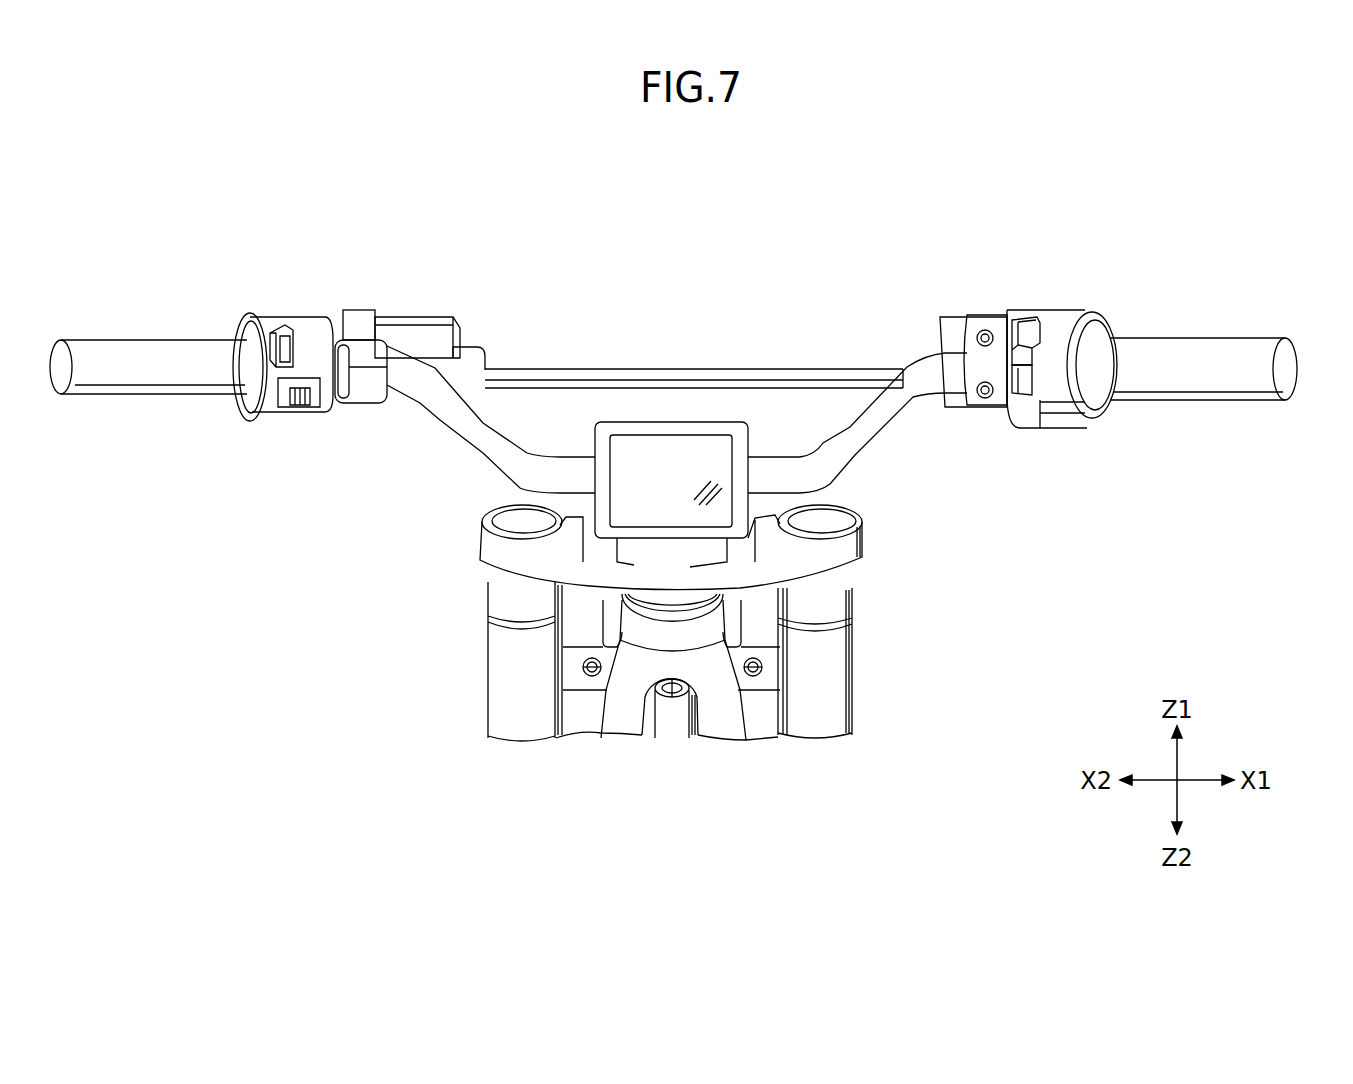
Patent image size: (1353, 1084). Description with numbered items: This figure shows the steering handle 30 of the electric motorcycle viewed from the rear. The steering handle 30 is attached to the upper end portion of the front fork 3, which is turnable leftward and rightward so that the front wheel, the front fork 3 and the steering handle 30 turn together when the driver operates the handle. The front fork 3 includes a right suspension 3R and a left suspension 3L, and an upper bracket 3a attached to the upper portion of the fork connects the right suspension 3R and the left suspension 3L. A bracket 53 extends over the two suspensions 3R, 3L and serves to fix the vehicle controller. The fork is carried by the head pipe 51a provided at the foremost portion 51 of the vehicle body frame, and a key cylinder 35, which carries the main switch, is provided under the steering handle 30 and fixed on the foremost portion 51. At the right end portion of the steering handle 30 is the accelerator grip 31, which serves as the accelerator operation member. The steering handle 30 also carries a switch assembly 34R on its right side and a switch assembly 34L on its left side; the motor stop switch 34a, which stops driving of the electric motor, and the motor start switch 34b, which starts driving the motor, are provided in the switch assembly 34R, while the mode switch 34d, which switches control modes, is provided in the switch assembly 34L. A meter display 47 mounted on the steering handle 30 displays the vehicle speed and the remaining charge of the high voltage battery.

The front fork 3 is at (677, 651).
The upper bracket 3a is at (862, 552).
The left suspension 3L is at (493, 702).
The right suspension 3R is at (850, 667).
The steering handle 30 is at (777, 348).
The accelerator grip 31 is at (1187, 358).
The switch assembly 34L is at (307, 327).
The switch assembly 34R is at (1092, 413).
The motor stop switch 34a is at (1027, 323).
The motor start switch 34b is at (1018, 375).
The mode switch 34d is at (280, 330).
The key cylinder 35 is at (675, 730).
The meter display 47 is at (723, 427).
The foremost portion of the vehicle body frame 51 is at (610, 727).
The head pipe 51a is at (667, 633).
The bracket 53 is at (768, 680).